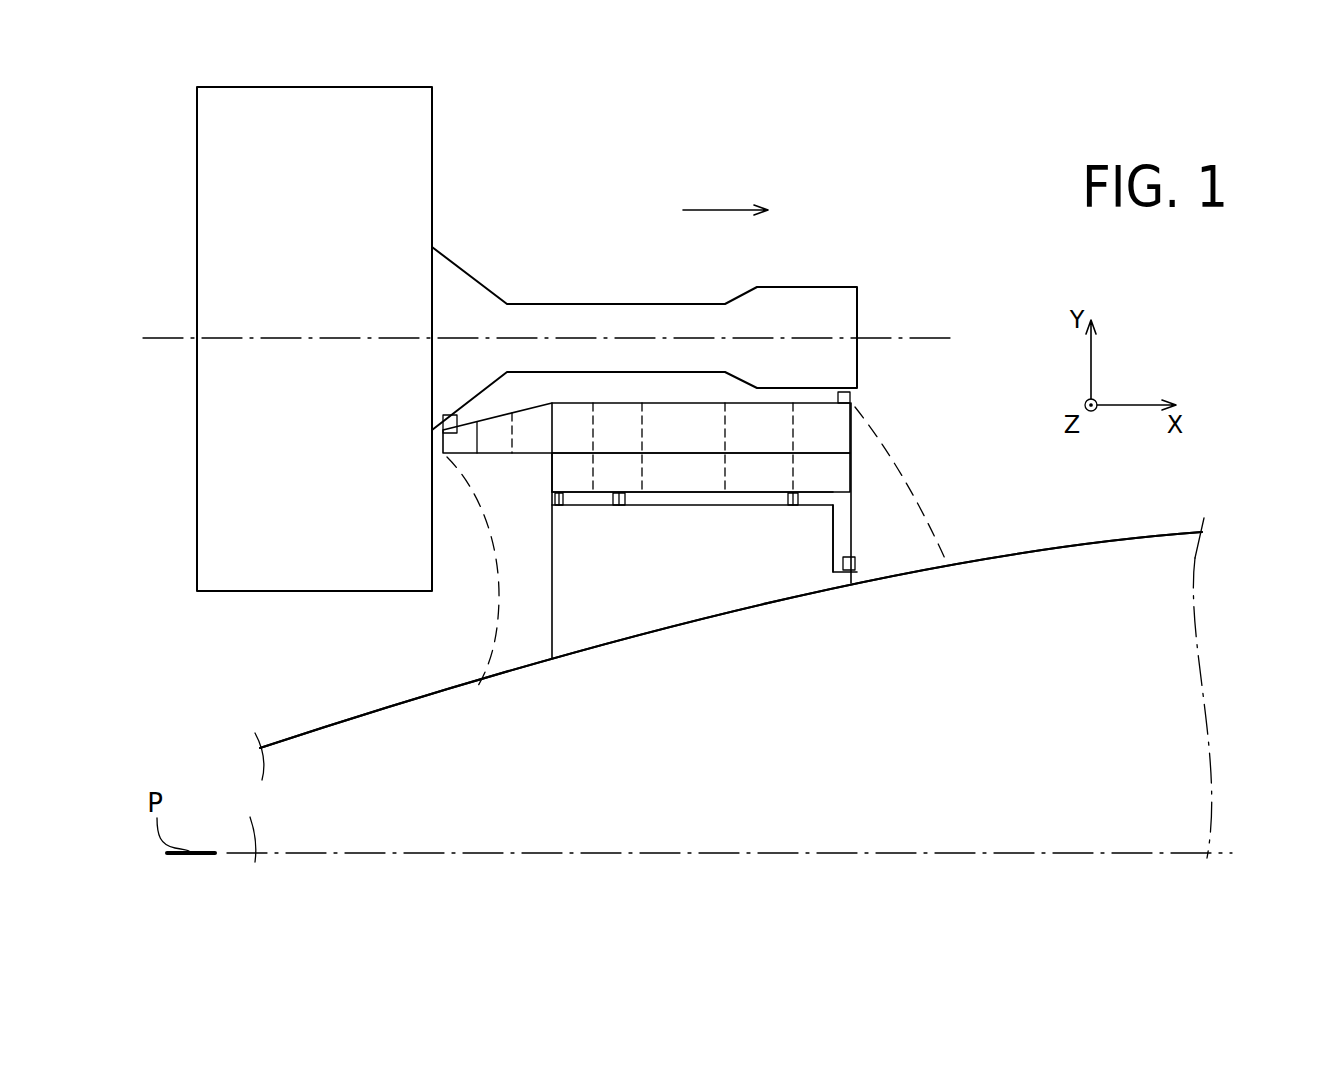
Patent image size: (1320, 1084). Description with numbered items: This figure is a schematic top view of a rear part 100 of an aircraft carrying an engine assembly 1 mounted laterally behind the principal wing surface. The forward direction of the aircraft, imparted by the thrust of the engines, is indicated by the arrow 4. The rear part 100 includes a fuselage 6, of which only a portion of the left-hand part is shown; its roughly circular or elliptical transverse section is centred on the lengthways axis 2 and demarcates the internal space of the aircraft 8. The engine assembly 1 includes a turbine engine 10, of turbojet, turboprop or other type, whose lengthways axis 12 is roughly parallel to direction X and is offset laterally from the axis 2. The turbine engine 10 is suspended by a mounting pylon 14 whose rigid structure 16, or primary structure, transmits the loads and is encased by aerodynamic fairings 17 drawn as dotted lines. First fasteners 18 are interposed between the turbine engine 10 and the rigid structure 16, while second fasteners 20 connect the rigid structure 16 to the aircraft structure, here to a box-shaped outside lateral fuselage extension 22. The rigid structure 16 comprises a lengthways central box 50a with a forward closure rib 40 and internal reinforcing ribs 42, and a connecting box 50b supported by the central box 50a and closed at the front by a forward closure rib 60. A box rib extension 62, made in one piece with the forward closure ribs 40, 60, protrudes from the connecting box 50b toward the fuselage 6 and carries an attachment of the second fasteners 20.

The engine assembly 1 is at (530, 232).
The lengthways axis 2 is at (1140, 853).
The arrow 4 is at (722, 210).
The fuselage 6 is at (373, 700).
The internal space of the aircraft 8 is at (604, 747).
The turbine engine 10 is at (446, 164).
The lengthways axis 12 is at (942, 338).
The mounting pylon 14 is at (916, 470).
The rigid structure 16 is at (851, 467).
The aerodynamic fairings 17 is at (513, 585).
The first fasteners 18 is at (447, 420).
The second fasteners 20 is at (845, 563).
The lateral fuselage extension 22 is at (835, 520).
The forward closure rib 40 is at (851, 405).
The internal reinforcing ribs 42 is at (642, 417).
The lengthways central box 50a is at (679, 407).
The connecting box 50b is at (681, 476).
The forward closure rib 60 is at (852, 473).
The box rib extension 62 is at (850, 533).
The rear part 100 is at (252, 657).